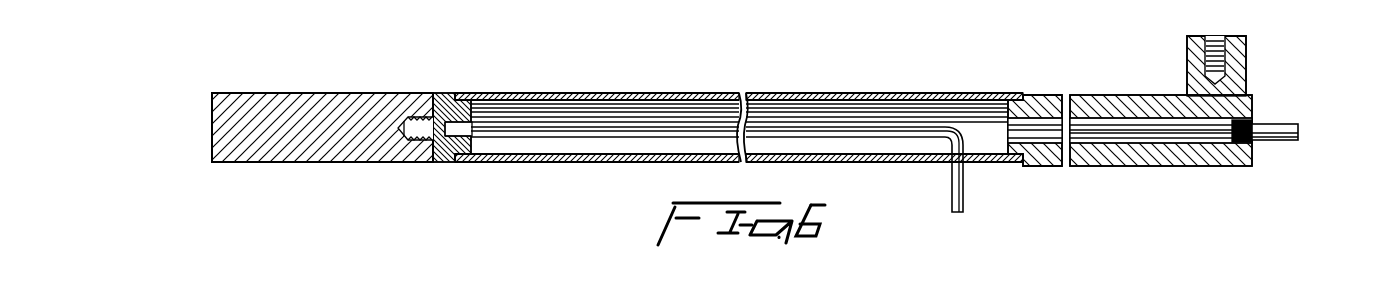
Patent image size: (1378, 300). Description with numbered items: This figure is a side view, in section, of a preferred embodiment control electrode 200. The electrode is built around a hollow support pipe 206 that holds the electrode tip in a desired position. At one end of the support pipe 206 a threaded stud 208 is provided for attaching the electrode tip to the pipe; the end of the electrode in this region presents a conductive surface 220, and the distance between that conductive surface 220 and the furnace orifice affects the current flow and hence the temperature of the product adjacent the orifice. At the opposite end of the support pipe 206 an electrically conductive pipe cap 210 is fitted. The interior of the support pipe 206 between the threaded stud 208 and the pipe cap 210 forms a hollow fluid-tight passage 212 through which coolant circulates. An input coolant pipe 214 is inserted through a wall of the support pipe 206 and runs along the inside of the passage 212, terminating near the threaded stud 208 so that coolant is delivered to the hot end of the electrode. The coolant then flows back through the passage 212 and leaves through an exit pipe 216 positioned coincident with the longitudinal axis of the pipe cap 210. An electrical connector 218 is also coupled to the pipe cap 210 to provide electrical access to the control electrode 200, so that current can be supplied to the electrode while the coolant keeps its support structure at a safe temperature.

The control electrode 200 is at (668, 83).
The hollow support pipe 206 is at (770, 98).
The threaded stud 208 is at (440, 93).
The pipe cap 210 is at (1082, 95).
The hollow fluid-tight passage 212 is at (628, 145).
The input coolant pipe 214 is at (963, 183).
The exit pipe 216 is at (1292, 125).
The electrical connector 218 is at (1245, 63).
The conductive surface 220 is at (257, 96).